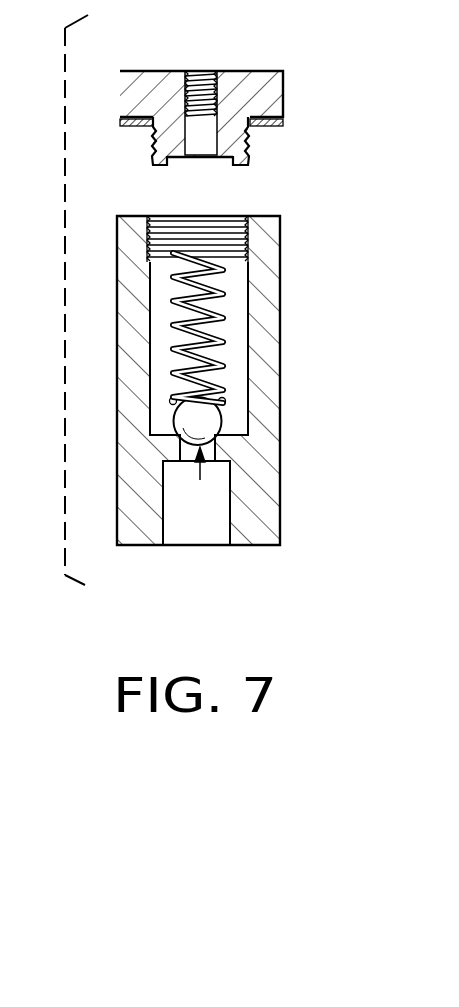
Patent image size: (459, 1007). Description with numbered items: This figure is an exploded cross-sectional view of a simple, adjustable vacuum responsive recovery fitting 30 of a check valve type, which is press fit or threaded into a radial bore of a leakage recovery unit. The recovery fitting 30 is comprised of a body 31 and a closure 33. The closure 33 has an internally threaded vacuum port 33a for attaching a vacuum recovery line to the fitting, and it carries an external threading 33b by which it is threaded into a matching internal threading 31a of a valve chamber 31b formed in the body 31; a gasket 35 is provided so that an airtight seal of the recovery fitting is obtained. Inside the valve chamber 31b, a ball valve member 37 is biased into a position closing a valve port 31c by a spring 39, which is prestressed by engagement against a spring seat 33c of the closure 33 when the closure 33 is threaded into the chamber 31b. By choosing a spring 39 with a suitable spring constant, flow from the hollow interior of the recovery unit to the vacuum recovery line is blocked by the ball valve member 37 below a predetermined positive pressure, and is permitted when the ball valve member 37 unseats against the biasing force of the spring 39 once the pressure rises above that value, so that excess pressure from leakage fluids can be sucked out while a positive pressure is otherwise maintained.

The recovery fitting 30 is at (62, 272).
The body 31 is at (266, 226).
The internal threading 31a is at (167, 222).
The valve chamber 31b is at (240, 406).
The valve port 31c is at (185, 456).
The closure 33 is at (247, 82).
The vacuum port 33a is at (200, 72).
The threaded stem 33b is at (249, 148).
The spring seat 33c is at (222, 160).
The gasket 35 is at (136, 128).
The ball valve member 37 is at (207, 433).
The spring 39 is at (236, 350).